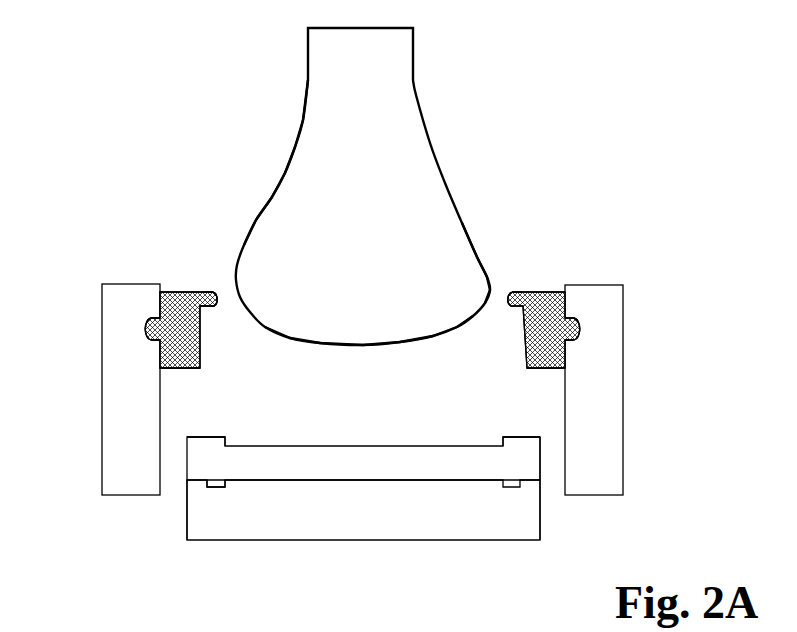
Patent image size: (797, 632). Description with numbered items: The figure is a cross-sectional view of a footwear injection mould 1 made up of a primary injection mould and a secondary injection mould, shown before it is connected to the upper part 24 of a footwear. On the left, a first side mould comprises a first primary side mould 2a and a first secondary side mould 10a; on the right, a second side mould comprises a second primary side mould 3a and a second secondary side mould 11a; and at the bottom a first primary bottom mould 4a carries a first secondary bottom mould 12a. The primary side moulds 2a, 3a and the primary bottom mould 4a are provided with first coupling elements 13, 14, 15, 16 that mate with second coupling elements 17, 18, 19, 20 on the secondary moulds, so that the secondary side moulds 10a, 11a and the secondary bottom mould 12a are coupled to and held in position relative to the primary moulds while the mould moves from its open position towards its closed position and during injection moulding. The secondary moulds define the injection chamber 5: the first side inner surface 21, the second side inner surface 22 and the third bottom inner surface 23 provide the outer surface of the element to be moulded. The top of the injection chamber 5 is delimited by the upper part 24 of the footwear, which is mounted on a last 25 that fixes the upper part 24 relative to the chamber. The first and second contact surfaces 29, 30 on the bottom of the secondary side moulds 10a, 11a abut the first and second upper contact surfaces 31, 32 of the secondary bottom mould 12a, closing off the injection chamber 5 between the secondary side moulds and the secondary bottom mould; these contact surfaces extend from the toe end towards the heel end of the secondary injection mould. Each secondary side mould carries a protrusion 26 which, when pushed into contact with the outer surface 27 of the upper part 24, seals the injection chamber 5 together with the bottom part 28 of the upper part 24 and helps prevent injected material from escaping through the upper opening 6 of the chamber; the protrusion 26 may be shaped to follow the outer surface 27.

The footwear injection mould 1 is at (665, 238).
The first primary side mould 2a is at (108, 400).
The second primary side mould 3a is at (612, 400).
The first primary bottom mould 4a is at (477, 540).
The injection chamber 5 is at (442, 397).
The upper opening 6 is at (222, 292).
The first secondary side mould 10a is at (188, 290).
The second secondary side mould 11a is at (541, 291).
The first secondary bottom mould 12a is at (180, 481).
The first coupling element 13 is at (145, 330).
The first coupling element 14 is at (583, 330).
The first coupling element 15 is at (220, 487).
The first coupling element 16 is at (540, 540).
The second coupling element 17 is at (197, 368).
The second coupling element 18 is at (560, 370).
The second coupling element 19 is at (232, 446).
The second coupling element 20 is at (500, 446).
The first side inner surface 21 is at (202, 335).
The second side inner surface 22 is at (518, 327).
The third bottom inner surface 23 is at (327, 446).
The upper part of a footwear 24 is at (287, 170).
The last 25 is at (430, 142).
The protrusion 26 is at (205, 306).
The outer surface of the upper part 27 is at (498, 292).
The bottom part of the upper part 28 is at (365, 346).
The first contact surface 29 is at (162, 375).
The second contact surface 30 is at (504, 440).
The first upper contact surface 31 is at (201, 437).
The second upper contact surface 32 is at (547, 440).